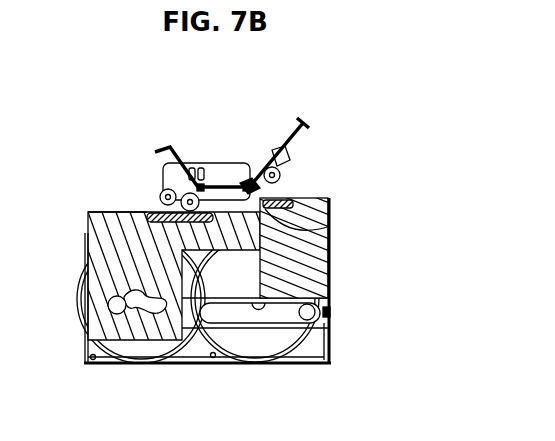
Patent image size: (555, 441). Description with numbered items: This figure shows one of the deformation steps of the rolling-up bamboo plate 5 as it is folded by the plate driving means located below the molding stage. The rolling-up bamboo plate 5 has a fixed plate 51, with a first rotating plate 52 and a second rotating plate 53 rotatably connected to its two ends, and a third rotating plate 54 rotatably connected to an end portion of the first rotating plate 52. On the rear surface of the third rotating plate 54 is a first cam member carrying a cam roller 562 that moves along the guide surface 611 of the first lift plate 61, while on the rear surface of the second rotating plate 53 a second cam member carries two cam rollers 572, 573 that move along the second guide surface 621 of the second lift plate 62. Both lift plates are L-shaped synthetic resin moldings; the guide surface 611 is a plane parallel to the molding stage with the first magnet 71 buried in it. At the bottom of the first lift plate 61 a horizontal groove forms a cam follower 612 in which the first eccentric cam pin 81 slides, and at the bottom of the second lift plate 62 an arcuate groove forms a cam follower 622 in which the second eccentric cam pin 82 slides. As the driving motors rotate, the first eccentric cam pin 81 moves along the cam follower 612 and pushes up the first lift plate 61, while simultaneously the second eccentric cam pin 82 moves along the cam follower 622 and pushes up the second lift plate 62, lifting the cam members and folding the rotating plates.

The rolling-up bamboo plate 5 is at (232, 135).
The fixed plate 51 is at (218, 182).
The first rotating plate 52 is at (264, 172).
The second rotating plate 53 is at (168, 172).
The third rotating plate 54 is at (296, 120).
The cam roller 562 is at (275, 182).
The cam roller 572 is at (150, 185).
The cam roller 573 is at (160, 190).
The first lift plate 61 is at (317, 270).
The guide surface 611 is at (322, 197).
The cam follower 612 is at (237, 313).
The second lift plate 62 is at (110, 256).
The second guide surface 621 is at (100, 212).
The cam follower 622 is at (113, 307).
The first magnet 71 is at (330, 231).
The first eccentric cam pin 81 is at (307, 320).
The second eccentric cam pin 82 is at (155, 342).